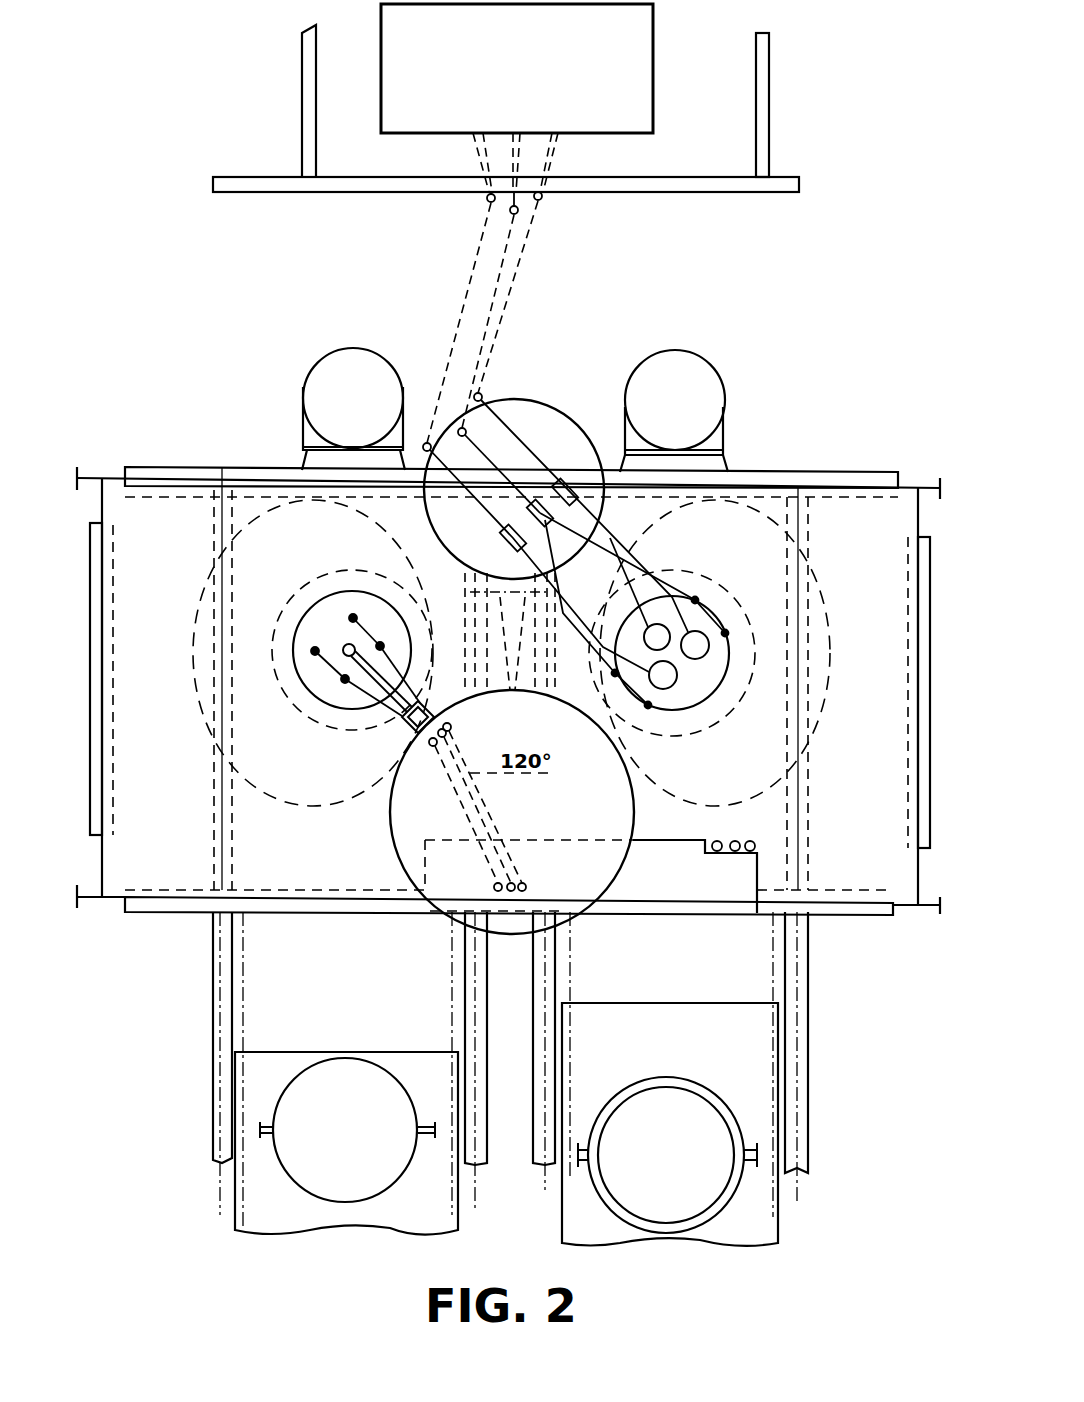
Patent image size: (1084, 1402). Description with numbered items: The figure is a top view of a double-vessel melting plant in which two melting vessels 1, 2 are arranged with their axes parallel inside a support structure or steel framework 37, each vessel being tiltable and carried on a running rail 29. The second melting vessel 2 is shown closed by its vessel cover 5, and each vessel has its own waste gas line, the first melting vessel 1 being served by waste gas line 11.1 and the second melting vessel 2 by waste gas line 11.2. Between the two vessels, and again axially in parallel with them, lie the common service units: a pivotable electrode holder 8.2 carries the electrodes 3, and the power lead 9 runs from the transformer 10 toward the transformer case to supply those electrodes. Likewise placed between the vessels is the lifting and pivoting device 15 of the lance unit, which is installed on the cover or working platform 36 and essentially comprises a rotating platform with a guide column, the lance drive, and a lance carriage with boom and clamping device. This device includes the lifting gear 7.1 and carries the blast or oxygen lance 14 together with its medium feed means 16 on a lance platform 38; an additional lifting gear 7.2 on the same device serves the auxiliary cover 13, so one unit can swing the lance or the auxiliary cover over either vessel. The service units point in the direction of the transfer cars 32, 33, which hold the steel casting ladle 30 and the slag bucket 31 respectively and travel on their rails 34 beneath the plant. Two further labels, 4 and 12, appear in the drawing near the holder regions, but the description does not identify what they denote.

The transformer 10 is at (522, 88).
The power lead 9 is at (470, 280).
The waste gas line 11.1 is at (353, 365).
The waste gas line 11.2 is at (678, 367).
The pivotable electrode holder 8.2 is at (520, 413).
The lifting gear 7.1 is at (538, 503).
The additional lifting gear 7.2 is at (404, 722).
The melting vessel 1 is at (242, 631).
The melting vessel 2 is at (777, 632).
The electrodes 3 is at (657, 636).
The holder region 4 is at (313, 588).
The vessel cover 5 is at (693, 577).
The holder 12 is at (700, 612).
The auxiliary cover 13 is at (317, 624).
The oxygen lance 14 is at (349, 645).
The lifting and pivoting device 15 is at (613, 817).
The medium feed means 16 is at (492, 820).
The working platform 36 is at (869, 781).
The support structure 37 is at (110, 897).
The lance platform 38 is at (740, 878).
The running rail 29 is at (803, 1130).
The steel casting ladle 30 is at (718, 1100).
The slag bucket 31 is at (357, 1075).
The transfer car 32 is at (720, 1020).
The transfer car 33 is at (267, 1068).
The rails 34 is at (243, 985).